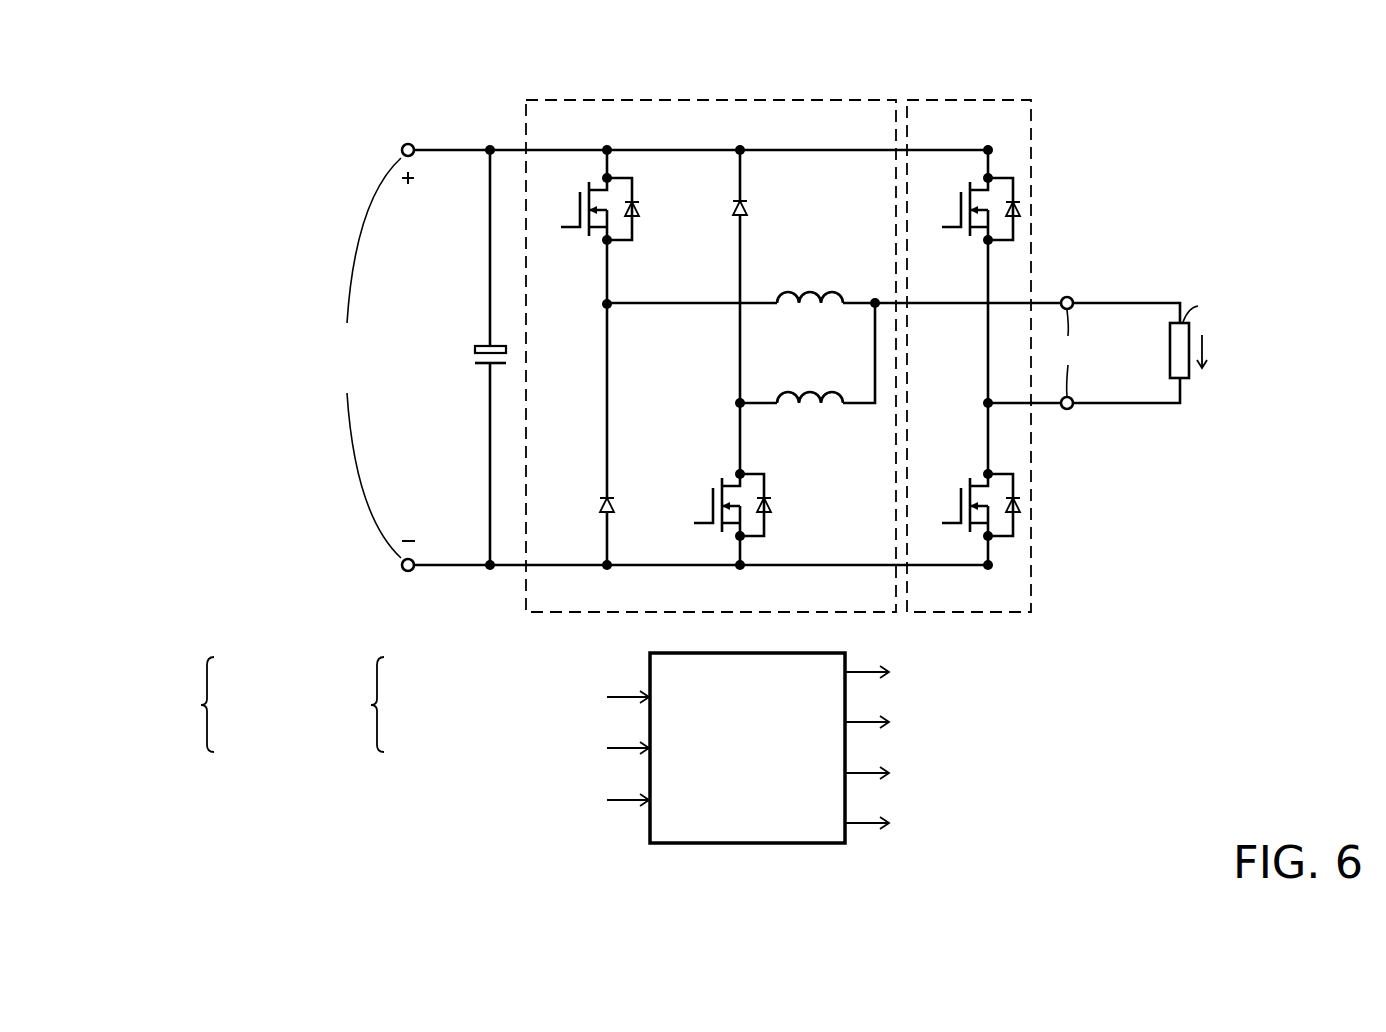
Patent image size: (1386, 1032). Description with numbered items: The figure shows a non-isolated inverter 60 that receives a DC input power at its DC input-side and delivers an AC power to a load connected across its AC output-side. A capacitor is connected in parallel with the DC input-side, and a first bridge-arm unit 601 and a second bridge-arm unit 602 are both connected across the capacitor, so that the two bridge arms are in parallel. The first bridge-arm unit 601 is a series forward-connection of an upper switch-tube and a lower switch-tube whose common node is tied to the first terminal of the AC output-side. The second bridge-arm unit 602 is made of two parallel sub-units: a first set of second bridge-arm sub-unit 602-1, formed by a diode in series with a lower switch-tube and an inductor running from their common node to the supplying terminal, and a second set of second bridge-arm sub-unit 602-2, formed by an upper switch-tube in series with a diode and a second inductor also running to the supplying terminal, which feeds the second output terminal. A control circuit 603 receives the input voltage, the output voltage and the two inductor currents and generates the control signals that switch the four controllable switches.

The non-isolated inverter 60 is at (680, 472).
The first bridge-arm unit 601 is at (988, 145).
The second bridge-arm unit 602 is at (740, 145).
The first set of second bridge-arm sub-unit 602-1 is at (187, 707).
The second set of second bridge-arm sub-unit 602-2 is at (352, 707).
The control circuit 603 is at (757, 843).